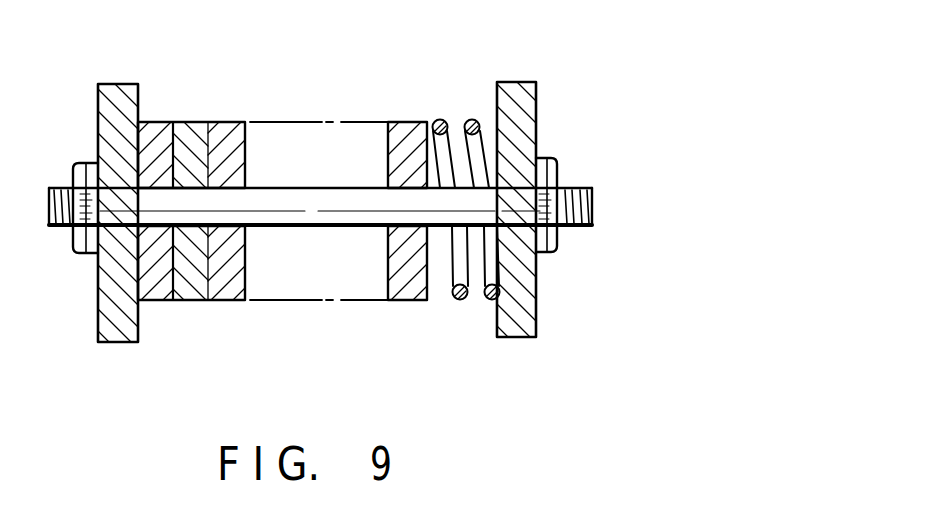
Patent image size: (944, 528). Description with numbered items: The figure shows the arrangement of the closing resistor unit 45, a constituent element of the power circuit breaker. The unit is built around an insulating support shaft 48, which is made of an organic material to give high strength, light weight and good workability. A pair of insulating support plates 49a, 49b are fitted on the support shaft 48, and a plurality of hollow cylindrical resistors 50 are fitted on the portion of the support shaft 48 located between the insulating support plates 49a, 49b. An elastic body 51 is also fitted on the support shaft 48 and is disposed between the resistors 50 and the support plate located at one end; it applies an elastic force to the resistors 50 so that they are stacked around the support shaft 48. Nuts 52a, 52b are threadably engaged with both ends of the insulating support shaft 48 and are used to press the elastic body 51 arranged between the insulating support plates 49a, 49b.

The closing resistor unit 45 is at (544, 109).
The insulating support shaft 48 is at (344, 192).
The insulating support plate 49a is at (100, 322).
The insulating support plate 49b is at (530, 315).
The hollow cylindrical resistors 50 is at (197, 128).
The elastic body 51 is at (463, 300).
The nut 52a is at (88, 255).
The nut 52b is at (553, 253).